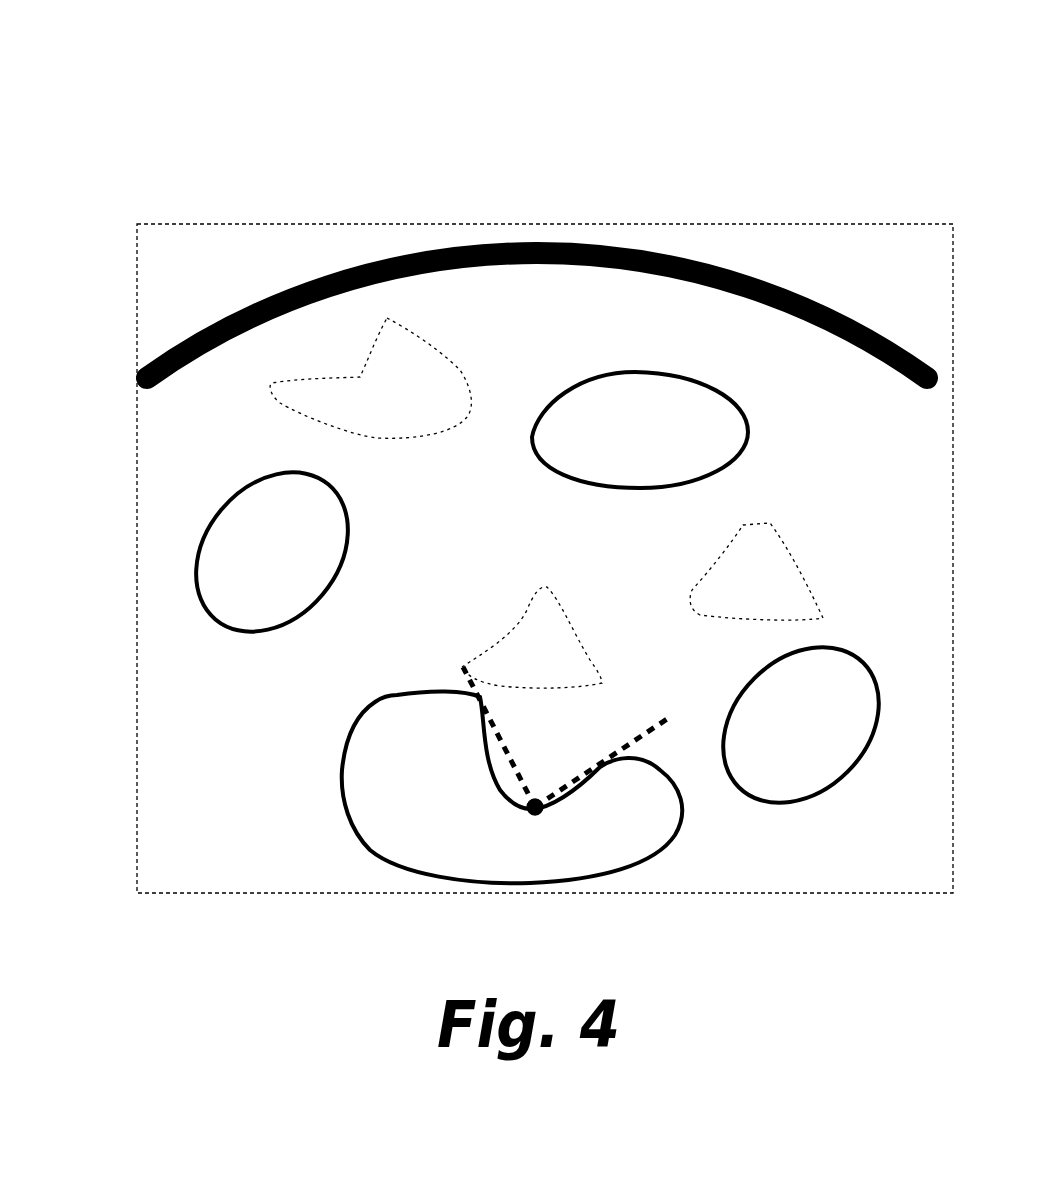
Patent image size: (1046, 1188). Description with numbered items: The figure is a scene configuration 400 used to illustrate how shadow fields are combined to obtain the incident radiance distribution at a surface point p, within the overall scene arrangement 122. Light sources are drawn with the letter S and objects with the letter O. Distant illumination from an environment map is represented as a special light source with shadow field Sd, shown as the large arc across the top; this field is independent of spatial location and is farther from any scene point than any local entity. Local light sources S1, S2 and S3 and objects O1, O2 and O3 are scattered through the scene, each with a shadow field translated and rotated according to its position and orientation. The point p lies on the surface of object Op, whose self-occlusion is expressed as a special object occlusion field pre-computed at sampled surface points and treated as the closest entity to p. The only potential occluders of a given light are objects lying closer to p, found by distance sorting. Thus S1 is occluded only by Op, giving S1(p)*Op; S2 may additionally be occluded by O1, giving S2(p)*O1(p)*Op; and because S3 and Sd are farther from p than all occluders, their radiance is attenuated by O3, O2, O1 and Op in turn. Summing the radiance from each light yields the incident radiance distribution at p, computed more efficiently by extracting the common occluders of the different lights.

The scene configuration view 400 is at (563, 54).
The scene configuration 122 is at (400, 222).
The shadow field of distant illumination Sd is at (537, 315).
The local light source S1 is at (532, 637).
The local light source S2 is at (756, 571).
The local light source S3 is at (370, 378).
The object occlusion field O1 is at (801, 725).
The object occlusion field O2 is at (272, 552).
The object occlusion field O3 is at (640, 430).
The self-occlusion object field Op is at (512, 787).
The surface point p is at (566, 758).